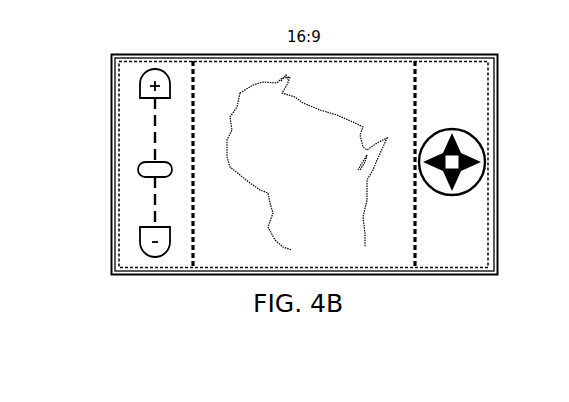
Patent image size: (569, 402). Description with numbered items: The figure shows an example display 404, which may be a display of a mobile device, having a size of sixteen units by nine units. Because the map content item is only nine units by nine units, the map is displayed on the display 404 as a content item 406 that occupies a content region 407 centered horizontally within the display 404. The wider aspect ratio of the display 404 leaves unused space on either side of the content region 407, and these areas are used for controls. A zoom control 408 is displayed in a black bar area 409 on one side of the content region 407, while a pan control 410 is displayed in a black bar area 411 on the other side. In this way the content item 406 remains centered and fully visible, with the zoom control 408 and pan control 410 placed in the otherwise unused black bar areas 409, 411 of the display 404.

The display 404 is at (380, 57).
The content item 406 is at (323, 178).
The content region 407 is at (243, 223).
The zoom control 408 is at (110, 72).
The black bar area 409 is at (172, 258).
The pan control 410 is at (454, 196).
The black bar area 411 is at (457, 258).